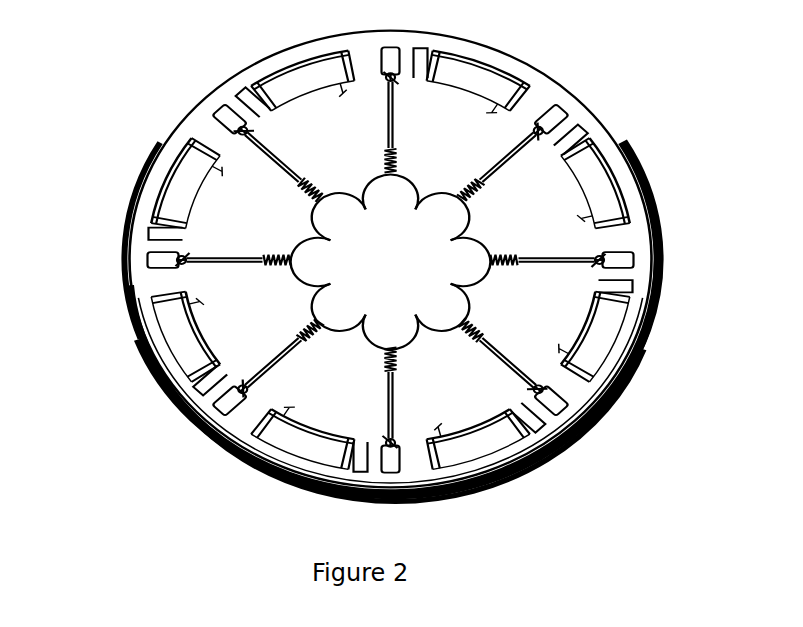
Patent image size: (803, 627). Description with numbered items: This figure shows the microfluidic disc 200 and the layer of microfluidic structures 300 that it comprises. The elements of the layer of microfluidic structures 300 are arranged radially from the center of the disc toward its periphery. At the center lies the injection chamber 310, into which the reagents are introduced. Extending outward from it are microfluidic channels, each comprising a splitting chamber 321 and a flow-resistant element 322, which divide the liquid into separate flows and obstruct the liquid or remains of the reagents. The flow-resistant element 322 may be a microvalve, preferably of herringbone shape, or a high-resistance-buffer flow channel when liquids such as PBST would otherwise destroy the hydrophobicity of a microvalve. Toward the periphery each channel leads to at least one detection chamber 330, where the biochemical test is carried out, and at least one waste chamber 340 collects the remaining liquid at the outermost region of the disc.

The microfluidic disc 200 is at (387, 265).
The layer of microfluidic structures 300 is at (540, 88).
The injection chamber 310 is at (517, 262).
The splitting chamber 321 is at (392, 332).
The flow-resistant element 322 is at (392, 372).
The detection chamber 330 is at (392, 455).
The waste chamber 340 is at (297, 443).